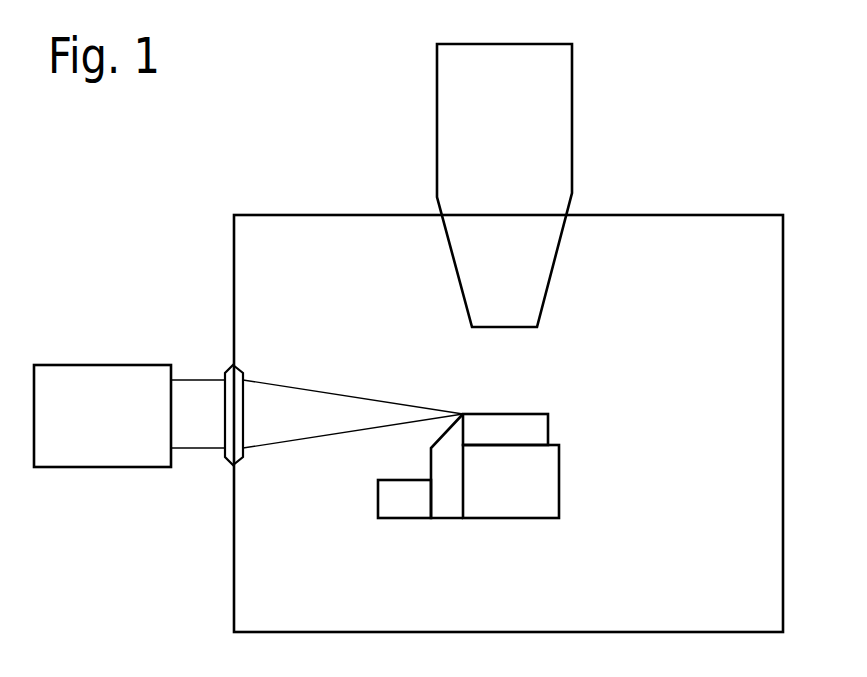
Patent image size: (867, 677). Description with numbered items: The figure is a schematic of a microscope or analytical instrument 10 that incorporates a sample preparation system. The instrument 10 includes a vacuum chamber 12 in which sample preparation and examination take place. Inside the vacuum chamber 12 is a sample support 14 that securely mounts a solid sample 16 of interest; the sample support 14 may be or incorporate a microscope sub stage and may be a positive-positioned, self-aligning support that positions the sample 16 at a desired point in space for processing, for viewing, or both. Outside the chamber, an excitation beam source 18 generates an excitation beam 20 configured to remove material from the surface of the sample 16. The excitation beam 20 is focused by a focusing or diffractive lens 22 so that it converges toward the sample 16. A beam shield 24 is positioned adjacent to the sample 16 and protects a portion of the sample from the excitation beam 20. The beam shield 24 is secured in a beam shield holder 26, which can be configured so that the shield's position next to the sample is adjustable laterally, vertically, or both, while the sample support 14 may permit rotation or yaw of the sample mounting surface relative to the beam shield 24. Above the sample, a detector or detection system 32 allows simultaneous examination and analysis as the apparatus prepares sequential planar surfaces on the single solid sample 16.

The microscope or analytical instrument 10 is at (296, 150).
The vacuum chamber 12 is at (652, 215).
The sample support 14 is at (559, 480).
The solid sample 16 is at (527, 414).
The excitation beam source 18 is at (130, 365).
The excitation beam 20 is at (327, 392).
The focusing or diffractive lens 22 is at (237, 368).
The beam shield 24 is at (428, 503).
The beam shield holder 26 is at (377, 503).
The detector or detection system 32 is at (572, 193).